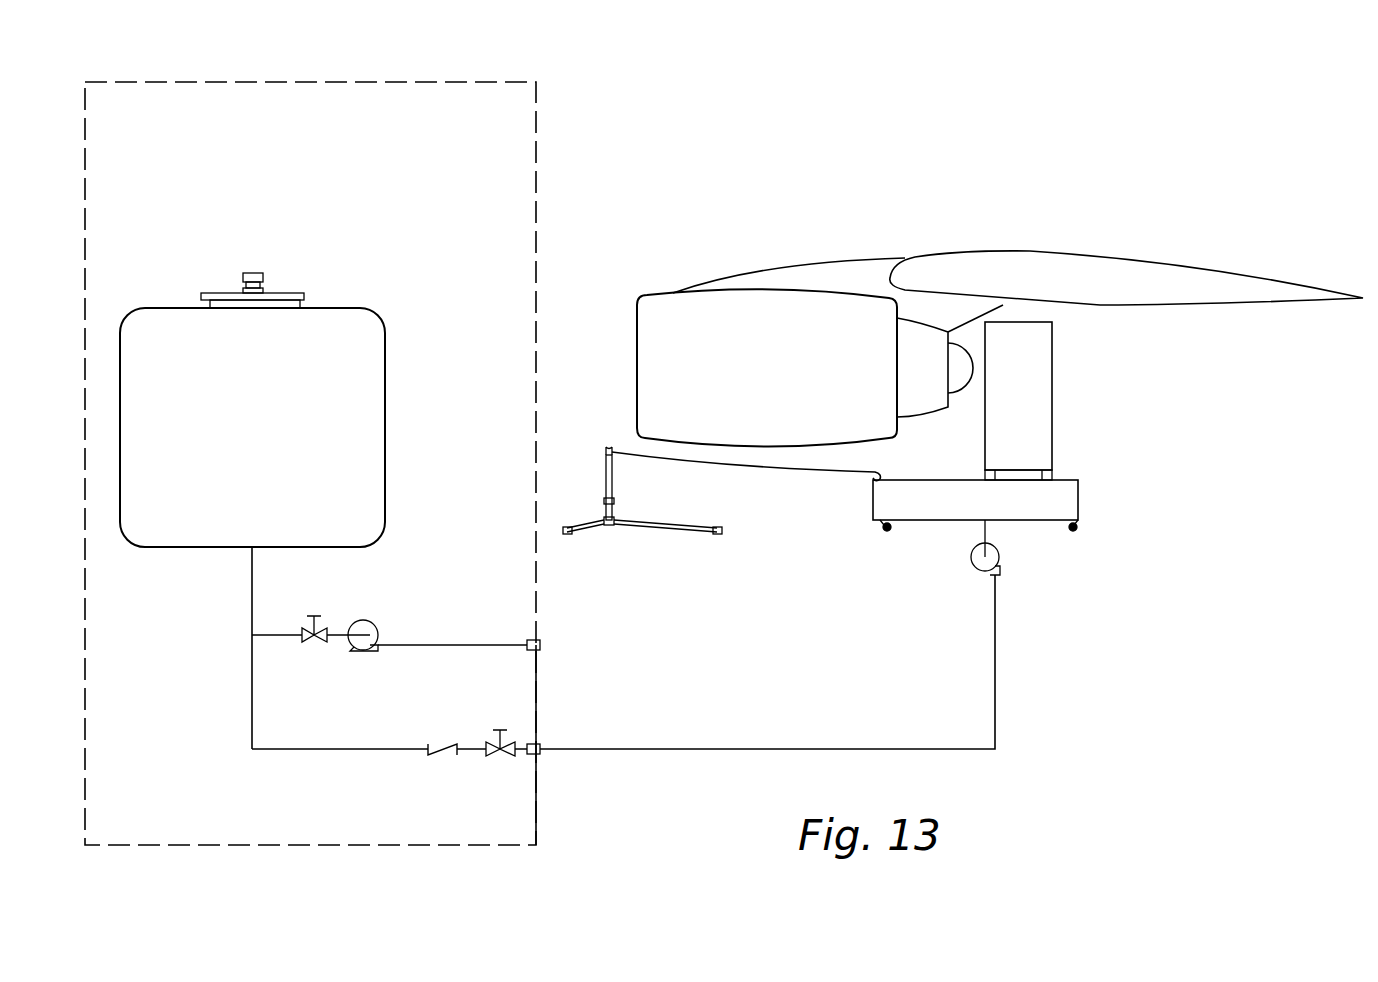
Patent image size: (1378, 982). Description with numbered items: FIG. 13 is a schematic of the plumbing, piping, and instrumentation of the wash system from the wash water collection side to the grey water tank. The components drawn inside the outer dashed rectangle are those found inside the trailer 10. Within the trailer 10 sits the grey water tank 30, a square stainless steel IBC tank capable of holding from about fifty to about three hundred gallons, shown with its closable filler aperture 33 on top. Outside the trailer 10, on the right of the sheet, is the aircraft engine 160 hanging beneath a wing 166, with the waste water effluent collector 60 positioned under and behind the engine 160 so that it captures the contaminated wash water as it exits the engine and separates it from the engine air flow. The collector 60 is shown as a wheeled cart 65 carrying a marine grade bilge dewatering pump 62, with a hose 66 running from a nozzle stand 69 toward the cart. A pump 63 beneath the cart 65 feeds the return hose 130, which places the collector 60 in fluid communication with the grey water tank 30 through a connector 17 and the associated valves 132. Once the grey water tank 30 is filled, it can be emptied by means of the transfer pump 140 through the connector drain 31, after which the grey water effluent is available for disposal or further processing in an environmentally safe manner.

The trailer 10 is at (540, 123).
The grey water tank 30 is at (387, 410).
The closable filler aperture 33 is at (252, 270).
The valves 132 is at (304, 642).
The transfer pump 140 is at (358, 656).
The connector drain 31 is at (542, 640).
The connector 17 is at (542, 745).
The return hose 130 is at (788, 747).
The pump 63 is at (1000, 556).
The cart 65 is at (928, 521).
The bilge dewatering pump 62 is at (1054, 427).
The waste water effluent collector 60 is at (1078, 398).
The nozzle stand 69 is at (614, 484).
The hose 66 is at (810, 470).
The aircraft engine 160 is at (636, 367).
The wing 166 is at (1070, 252).